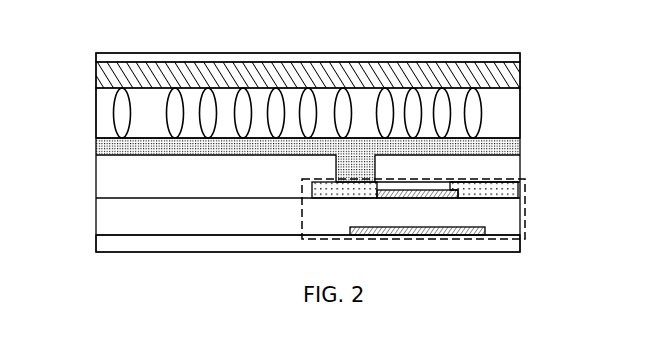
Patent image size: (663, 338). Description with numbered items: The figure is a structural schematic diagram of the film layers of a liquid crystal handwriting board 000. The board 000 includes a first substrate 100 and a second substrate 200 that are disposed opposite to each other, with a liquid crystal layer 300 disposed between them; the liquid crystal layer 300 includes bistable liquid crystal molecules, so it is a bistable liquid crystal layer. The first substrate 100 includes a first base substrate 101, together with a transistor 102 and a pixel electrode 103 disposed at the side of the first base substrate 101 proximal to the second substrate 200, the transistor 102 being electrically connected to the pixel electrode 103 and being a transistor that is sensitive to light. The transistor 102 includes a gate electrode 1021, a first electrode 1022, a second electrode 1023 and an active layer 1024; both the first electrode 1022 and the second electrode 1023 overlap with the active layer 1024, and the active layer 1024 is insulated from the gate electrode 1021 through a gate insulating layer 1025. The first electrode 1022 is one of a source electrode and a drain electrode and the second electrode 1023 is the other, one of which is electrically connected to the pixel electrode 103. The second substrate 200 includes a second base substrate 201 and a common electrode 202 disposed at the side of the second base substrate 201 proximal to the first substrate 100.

The liquid crystal handwriting board 000 is at (88, 32).
The first substrate 100 is at (327, 195).
The first base substrate 101 is at (530, 244).
The transistor 102 is at (300, 199).
The pixel electrode 103 is at (340, 160).
The gate electrode 1021 is at (371, 227).
The first electrode 1022 is at (452, 191).
The second electrode 1023 is at (379, 185).
The active layer 1024 is at (423, 193).
The gate insulating layer 1025 is at (88, 220).
The second substrate 200 is at (371, 71).
The second base substrate 201 is at (530, 57).
The common electrode 202 is at (530, 83).
The liquid crystal layer 300 is at (530, 114).